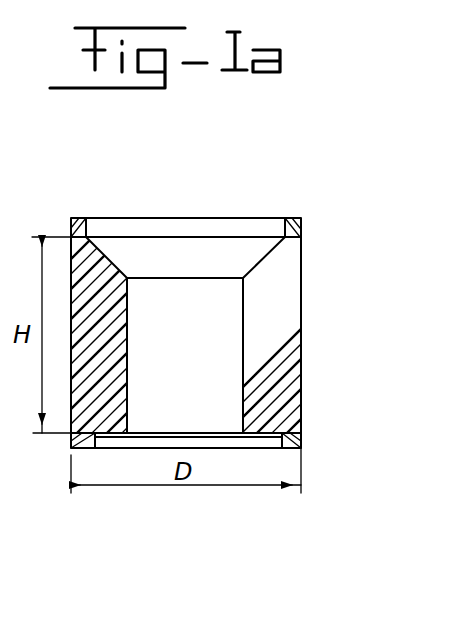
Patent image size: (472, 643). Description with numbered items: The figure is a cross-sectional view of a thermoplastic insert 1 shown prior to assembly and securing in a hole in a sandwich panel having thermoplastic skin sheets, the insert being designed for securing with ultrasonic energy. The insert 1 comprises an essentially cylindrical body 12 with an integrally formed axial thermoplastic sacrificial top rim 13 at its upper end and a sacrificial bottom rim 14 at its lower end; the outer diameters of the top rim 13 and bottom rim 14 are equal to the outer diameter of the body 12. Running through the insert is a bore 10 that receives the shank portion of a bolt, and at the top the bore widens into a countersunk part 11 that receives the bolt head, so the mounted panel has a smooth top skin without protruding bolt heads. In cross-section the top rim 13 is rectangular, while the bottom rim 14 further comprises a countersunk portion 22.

The insert 1 is at (126, 198).
The bore 10 is at (228, 368).
The countersunk part 11 is at (262, 252).
The body 12 is at (298, 302).
The top sacrificial rim 13 is at (295, 232).
The bottom sacrificial rim 14 is at (299, 436).
The countersunk portion 22 is at (284, 447).